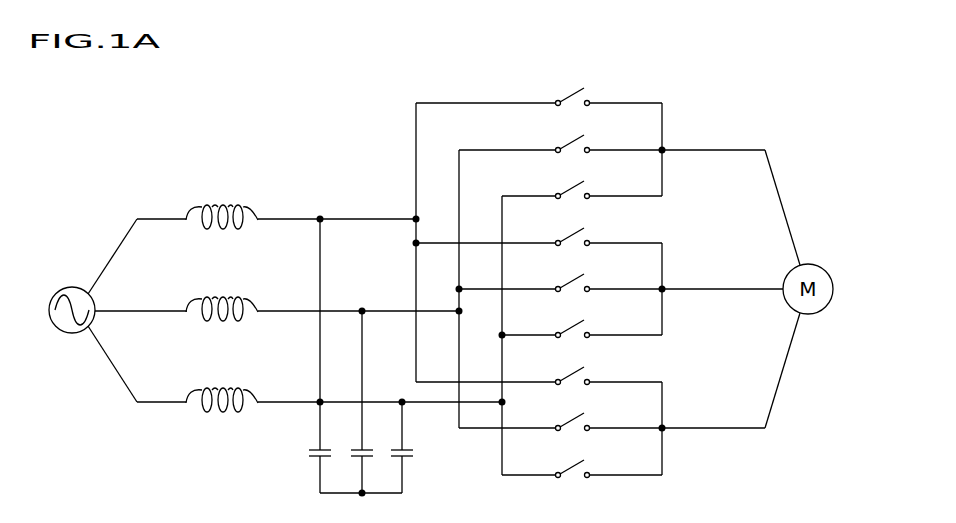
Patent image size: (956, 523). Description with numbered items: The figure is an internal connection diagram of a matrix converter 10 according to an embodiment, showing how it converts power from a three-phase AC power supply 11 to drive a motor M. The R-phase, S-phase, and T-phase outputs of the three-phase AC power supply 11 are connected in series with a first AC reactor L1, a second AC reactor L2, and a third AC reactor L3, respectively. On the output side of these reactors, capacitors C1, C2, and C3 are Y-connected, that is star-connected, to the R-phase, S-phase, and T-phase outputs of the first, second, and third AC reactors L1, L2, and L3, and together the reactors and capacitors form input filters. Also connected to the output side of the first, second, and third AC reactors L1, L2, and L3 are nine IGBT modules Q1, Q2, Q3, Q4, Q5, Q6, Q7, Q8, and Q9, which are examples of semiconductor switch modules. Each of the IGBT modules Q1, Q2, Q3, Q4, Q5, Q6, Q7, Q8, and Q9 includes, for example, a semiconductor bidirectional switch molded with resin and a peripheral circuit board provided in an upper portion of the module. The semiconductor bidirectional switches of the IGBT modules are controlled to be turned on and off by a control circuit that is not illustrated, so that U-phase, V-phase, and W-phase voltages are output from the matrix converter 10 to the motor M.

The matrix converter 10 is at (258, 153).
The three-phase AC power supply 11 is at (62, 290).
The first AC reactor L1 is at (195, 205).
The second AC reactor L2 is at (195, 297).
The third AC reactor L3 is at (197, 388).
The capacitor C1 is at (315, 441).
The capacitor C2 is at (358, 445).
The capacitor C3 is at (408, 446).
The IGBT module Q1 is at (572, 94).
The IGBT module Q2 is at (572, 141).
The IGBT module Q3 is at (572, 187).
The IGBT module Q4 is at (572, 234).
The IGBT module Q5 is at (572, 280).
The IGBT module Q6 is at (572, 326).
The IGBT module Q7 is at (572, 373).
The IGBT module Q8 is at (572, 419).
The IGBT module Q9 is at (572, 466).